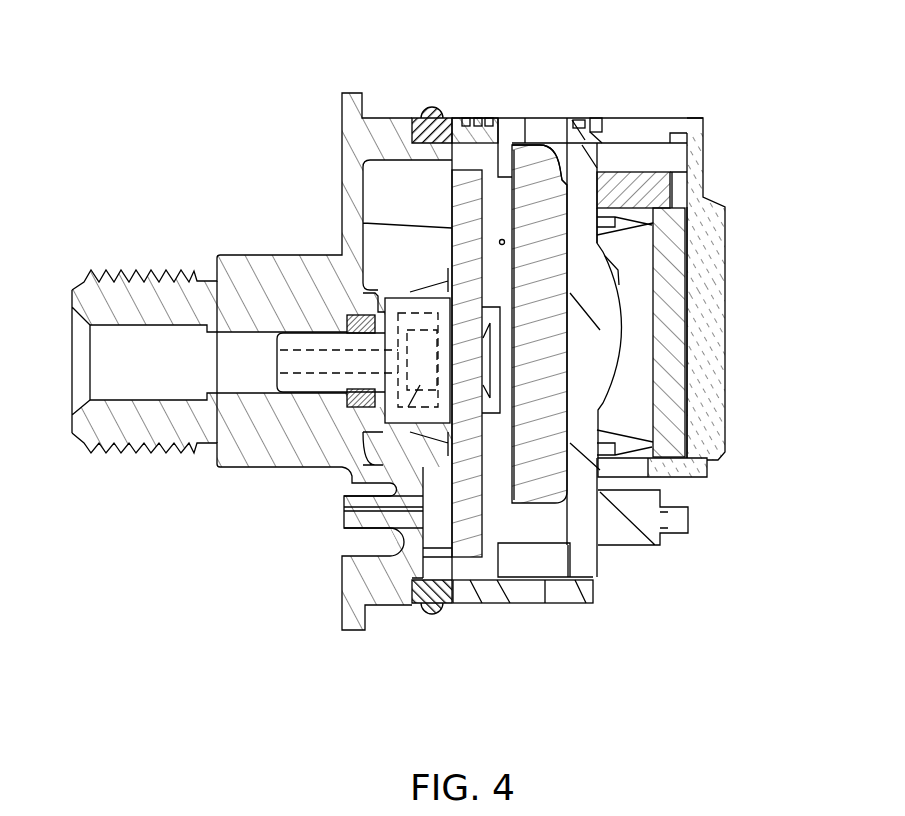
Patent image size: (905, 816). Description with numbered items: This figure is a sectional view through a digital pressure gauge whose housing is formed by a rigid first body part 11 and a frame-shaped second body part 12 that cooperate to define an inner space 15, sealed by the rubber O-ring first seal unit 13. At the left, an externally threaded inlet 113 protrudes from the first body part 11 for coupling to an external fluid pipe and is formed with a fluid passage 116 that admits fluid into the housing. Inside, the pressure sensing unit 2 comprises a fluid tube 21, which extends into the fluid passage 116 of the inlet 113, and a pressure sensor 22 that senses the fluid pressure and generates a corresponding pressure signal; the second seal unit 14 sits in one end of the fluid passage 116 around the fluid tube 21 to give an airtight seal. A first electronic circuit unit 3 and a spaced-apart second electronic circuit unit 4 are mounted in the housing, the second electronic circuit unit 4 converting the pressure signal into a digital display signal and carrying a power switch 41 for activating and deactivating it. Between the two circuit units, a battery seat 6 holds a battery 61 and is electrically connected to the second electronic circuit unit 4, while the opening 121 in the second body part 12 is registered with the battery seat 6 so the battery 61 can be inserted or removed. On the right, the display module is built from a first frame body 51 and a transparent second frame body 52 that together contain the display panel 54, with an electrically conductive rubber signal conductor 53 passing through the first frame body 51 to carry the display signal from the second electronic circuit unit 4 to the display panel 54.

The first body part 11 is at (388, 105).
The inlet 113 is at (227, 237).
The fluid passage 116 is at (108, 361).
The inner space 15 is at (385, 190).
The second seal unit 14 is at (350, 392).
The first seal unit 13 is at (428, 108).
The second body part 12 is at (482, 118).
The opening 121 is at (539, 114).
The battery seat 6 is at (503, 239).
The battery 61 is at (545, 160).
The first electronic circuit unit 3 is at (468, 538).
The pressure sensing unit 2 is at (222, 510).
The fluid tube 21 is at (303, 366).
The pressure sensor 22 is at (418, 386).
The second electronic circuit unit 4 is at (600, 565).
The power switch 41 is at (677, 520).
The first frame body 51 is at (675, 160).
The second frame body 52 is at (718, 230).
The signal conductor 53 is at (660, 190).
The display panel 54 is at (680, 410).